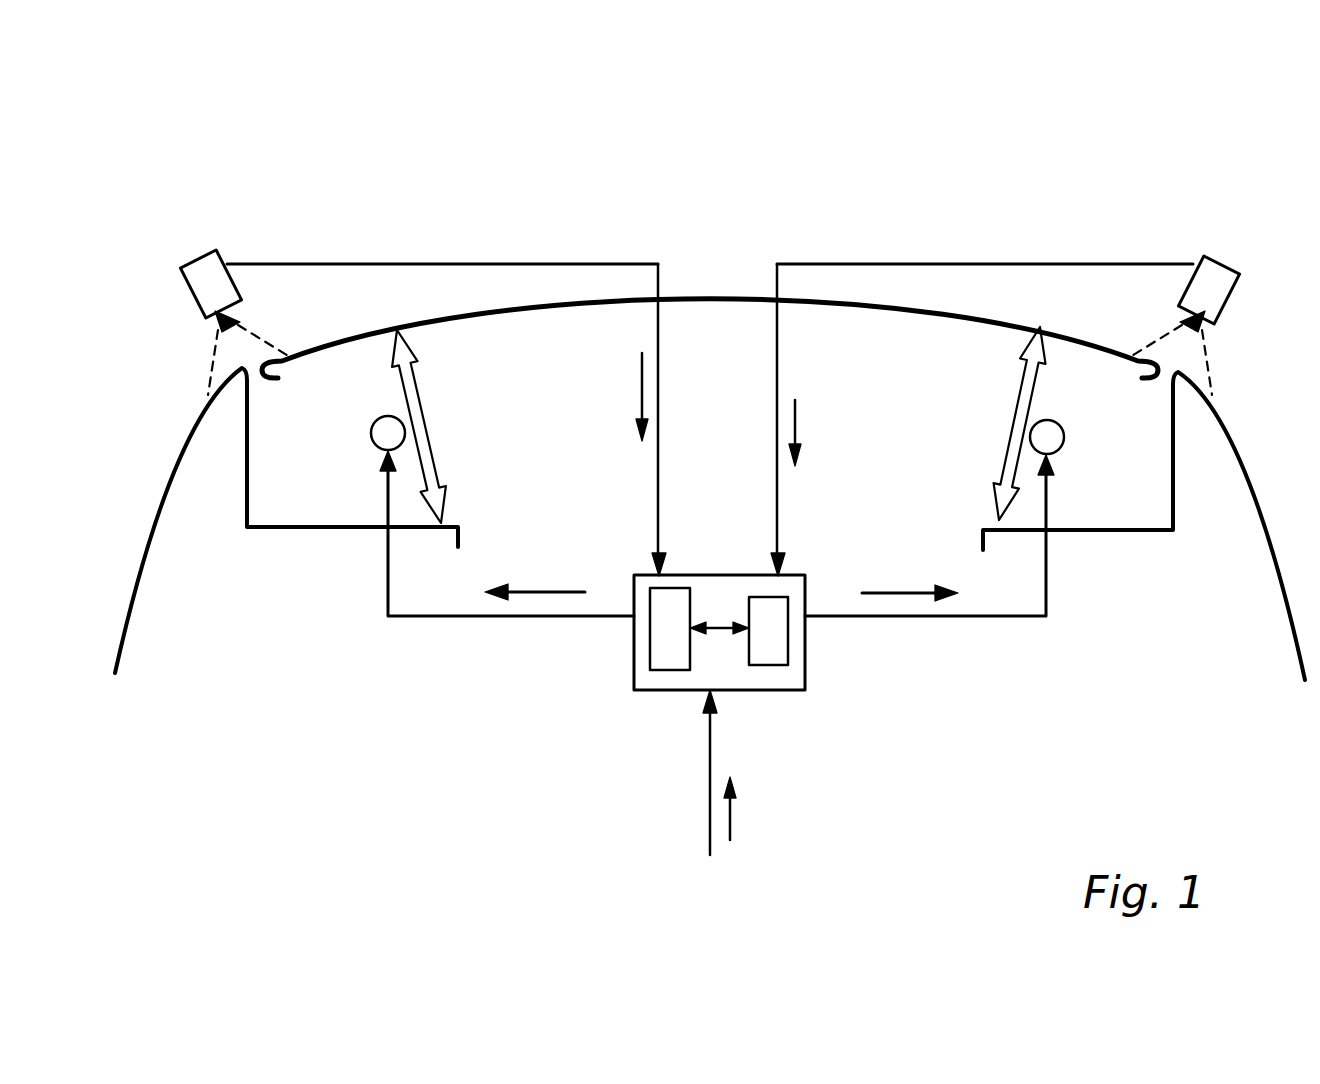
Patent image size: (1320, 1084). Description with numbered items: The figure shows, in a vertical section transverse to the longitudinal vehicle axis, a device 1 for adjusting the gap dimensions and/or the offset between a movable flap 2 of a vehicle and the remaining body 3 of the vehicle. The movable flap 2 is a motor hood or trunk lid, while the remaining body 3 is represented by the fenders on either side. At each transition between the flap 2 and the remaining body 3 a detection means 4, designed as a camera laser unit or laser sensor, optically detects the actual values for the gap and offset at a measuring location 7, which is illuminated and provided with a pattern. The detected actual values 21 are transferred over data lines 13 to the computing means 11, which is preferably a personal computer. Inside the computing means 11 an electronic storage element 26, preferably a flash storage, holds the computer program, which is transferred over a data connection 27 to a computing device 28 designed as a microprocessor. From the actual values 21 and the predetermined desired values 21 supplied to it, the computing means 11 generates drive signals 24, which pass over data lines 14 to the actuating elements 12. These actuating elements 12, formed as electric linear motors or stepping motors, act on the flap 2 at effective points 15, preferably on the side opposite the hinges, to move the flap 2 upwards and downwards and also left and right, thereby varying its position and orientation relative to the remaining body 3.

The device 1 is at (912, 232).
The movable flap 2 is at (706, 293).
The remaining body 3 is at (207, 543).
The detection means 4 is at (205, 270).
The measuring location 7 is at (240, 362).
The computing means 11 is at (773, 680).
The actuating elements 12 is at (371, 433).
The data lines 13 is at (777, 483).
The data lines 14 is at (428, 618).
The effective points 15 is at (395, 320).
The actual values and desired values 21 is at (716, 604).
The drive signals 24 is at (721, 576).
The electronic storage element 26 is at (665, 668).
The data connection 27 is at (718, 625).
The computing device 28 is at (783, 650).